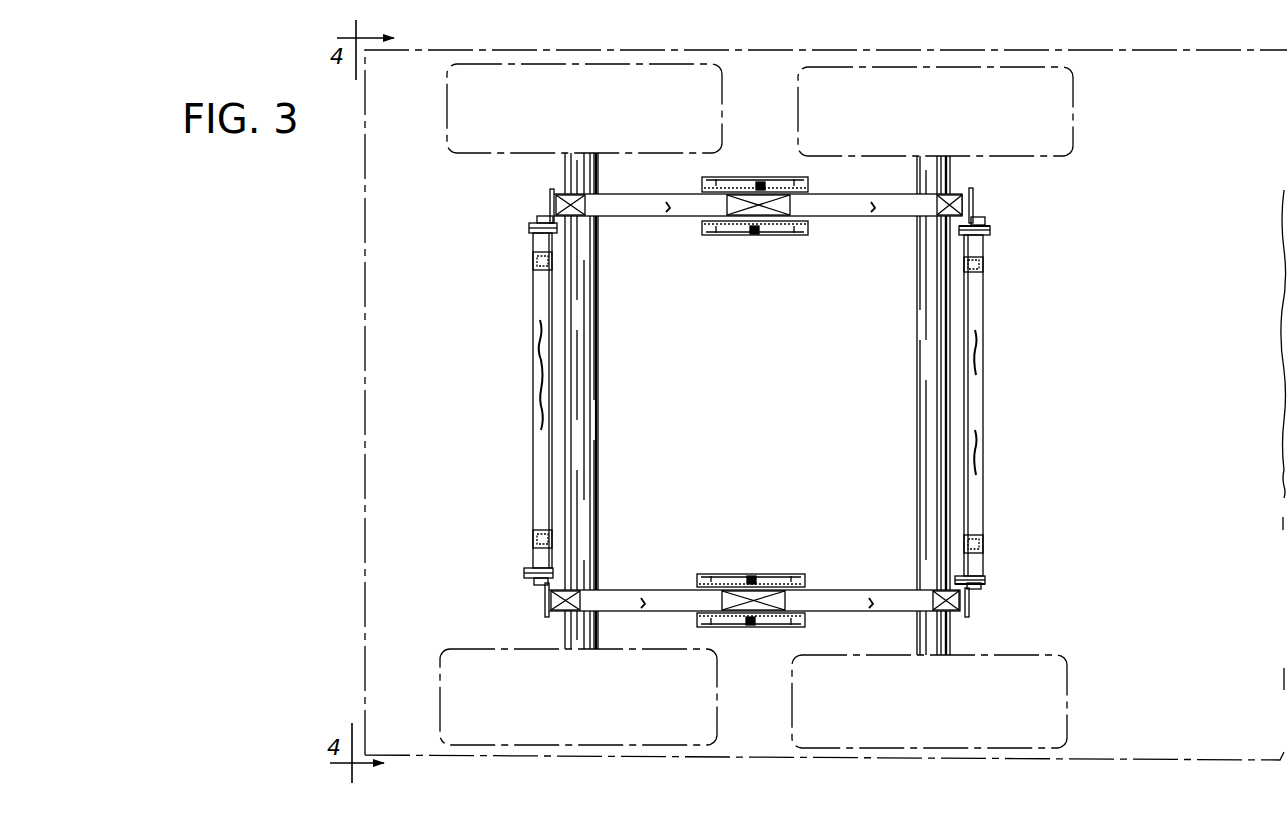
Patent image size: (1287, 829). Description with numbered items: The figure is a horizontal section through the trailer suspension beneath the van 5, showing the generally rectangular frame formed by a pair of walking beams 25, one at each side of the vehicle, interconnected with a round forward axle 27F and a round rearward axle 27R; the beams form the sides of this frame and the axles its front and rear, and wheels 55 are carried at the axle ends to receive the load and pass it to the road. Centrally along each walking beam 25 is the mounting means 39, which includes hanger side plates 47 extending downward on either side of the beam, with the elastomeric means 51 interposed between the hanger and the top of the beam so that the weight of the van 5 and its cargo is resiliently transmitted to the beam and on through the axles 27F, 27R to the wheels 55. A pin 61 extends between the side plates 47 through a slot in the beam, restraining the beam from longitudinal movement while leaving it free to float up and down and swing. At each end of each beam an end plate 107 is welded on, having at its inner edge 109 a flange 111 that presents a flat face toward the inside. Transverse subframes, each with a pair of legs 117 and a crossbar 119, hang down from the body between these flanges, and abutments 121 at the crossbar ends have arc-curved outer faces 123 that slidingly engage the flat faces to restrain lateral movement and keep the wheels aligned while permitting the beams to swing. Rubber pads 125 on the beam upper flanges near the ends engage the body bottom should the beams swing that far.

The van 5 is at (535, 757).
The walking beam 25 is at (852, 224).
The rearward axle 27R is at (585, 405).
The forward axle 27F is at (917, 390).
The mounting means 39 is at (747, 247).
The side plate 47 is at (797, 180).
The elastomeric means 51 is at (798, 206).
The wheel 55 is at (786, 36).
The pin 61 is at (762, 183).
The end plate 107 is at (550, 195).
The edge 109 is at (591, 580).
The flange 111 is at (538, 218).
The leg 117 is at (533, 260).
The crossbar 119 is at (533, 410).
The abutment 121 is at (528, 228).
The outer face 123 is at (991, 229).
The rubber pad 125 is at (589, 207).